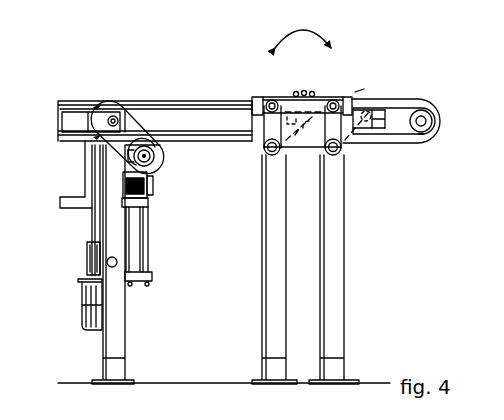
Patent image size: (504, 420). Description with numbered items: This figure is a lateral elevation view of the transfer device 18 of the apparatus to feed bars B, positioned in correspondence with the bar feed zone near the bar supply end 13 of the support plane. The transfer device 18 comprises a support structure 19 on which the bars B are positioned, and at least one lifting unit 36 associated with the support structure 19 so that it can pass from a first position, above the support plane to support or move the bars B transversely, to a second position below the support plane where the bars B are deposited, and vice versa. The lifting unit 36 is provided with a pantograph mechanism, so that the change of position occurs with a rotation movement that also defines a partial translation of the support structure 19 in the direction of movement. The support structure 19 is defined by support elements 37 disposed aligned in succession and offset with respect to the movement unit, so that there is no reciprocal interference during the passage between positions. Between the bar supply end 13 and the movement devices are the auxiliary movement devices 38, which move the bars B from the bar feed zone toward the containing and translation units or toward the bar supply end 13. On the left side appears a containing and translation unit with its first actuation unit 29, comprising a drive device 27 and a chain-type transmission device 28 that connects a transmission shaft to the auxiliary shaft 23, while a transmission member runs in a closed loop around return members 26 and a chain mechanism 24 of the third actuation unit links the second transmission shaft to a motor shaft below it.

The bar supply end 13 is at (441, 100).
The transfer device 18 is at (376, 79).
The support structure 19 is at (266, 90).
The auxiliary shaft 23 is at (154, 168).
The chain mechanism 24 is at (125, 244).
The return members 26 is at (127, 122).
The drive device 27 is at (139, 203).
The transmission device 28 is at (163, 157).
The first actuation unit 29 is at (156, 128).
The lifting unit 36 is at (355, 154).
The support elements 37 is at (339, 96).
The auxiliary movement devices 38 is at (407, 96).
The bars B is at (312, 91).